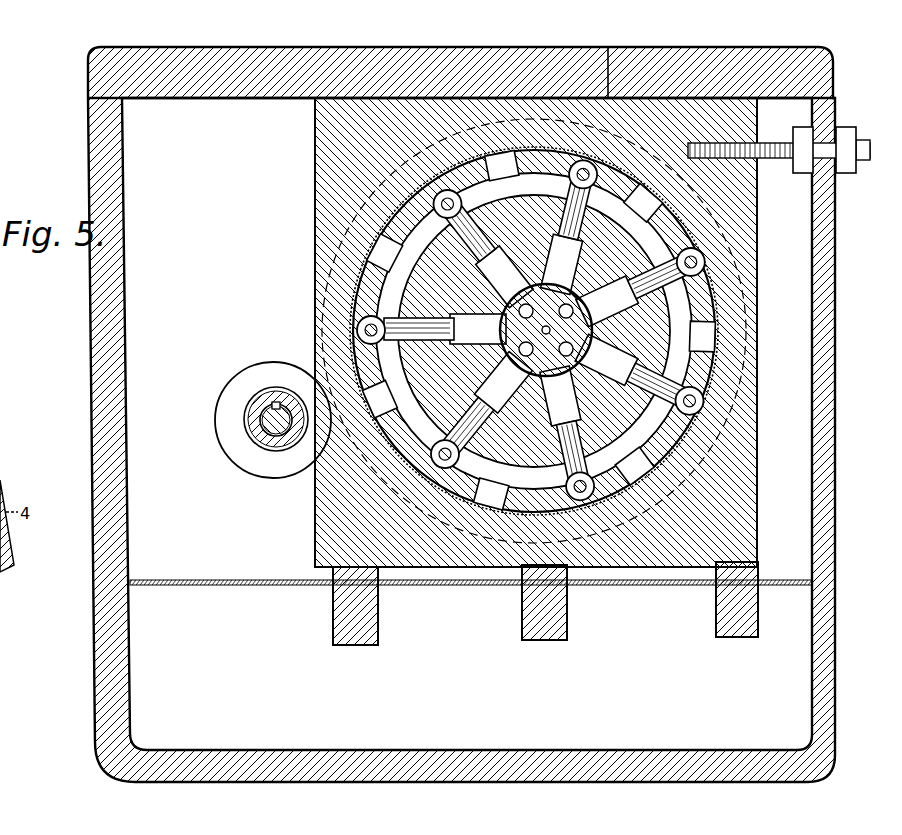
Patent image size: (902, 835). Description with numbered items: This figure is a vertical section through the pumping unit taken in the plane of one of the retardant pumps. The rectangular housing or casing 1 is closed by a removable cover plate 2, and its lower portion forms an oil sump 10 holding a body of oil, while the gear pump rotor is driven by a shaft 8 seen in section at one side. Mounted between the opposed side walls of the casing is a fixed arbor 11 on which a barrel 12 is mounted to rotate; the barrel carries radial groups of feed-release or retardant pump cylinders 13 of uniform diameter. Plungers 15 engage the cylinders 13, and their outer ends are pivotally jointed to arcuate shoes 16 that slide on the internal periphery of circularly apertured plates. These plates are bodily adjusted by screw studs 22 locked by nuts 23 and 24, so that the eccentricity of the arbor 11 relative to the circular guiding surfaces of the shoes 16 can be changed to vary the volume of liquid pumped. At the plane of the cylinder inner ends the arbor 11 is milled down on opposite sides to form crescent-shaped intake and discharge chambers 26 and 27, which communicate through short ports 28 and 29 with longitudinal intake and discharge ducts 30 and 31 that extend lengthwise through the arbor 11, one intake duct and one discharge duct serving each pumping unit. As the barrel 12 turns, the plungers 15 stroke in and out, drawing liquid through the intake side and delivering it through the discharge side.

The housing or casing 1 is at (108, 324).
The removable cover plate 2 is at (510, 53).
The shaft 8 is at (276, 434).
The oil sump 10 is at (471, 615).
The fixed arbor 11 is at (520, 352).
The barrel 12 is at (445, 302).
The feed-release or retardant pump cylinders 13 is at (550, 262).
The plungers 15 is at (582, 248).
The arcuate shoes 16 is at (540, 180).
The screw studs 22 is at (868, 142).
The nuts 23 is at (846, 127).
The nuts 24 is at (803, 127).
The intake chamber 26 is at (466, 442).
The discharge chamber 27 is at (567, 289).
The port 28 is at (604, 432).
The port 29 is at (446, 296).
The intake duct 30 is at (574, 350).
The discharge duct 31 is at (556, 328).